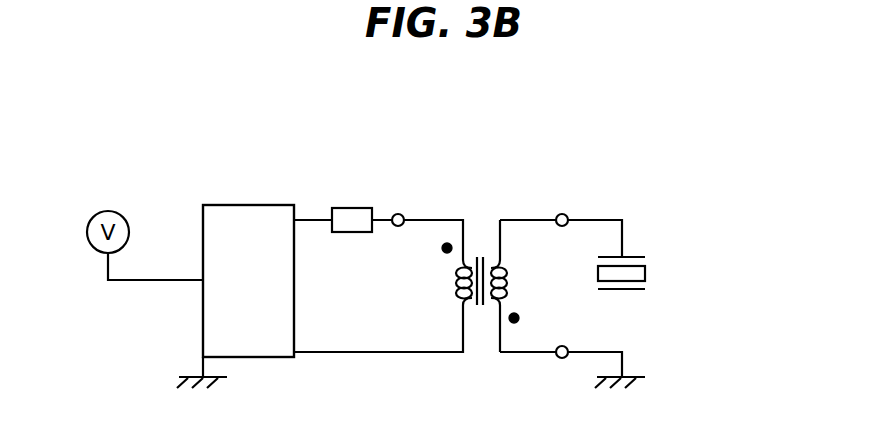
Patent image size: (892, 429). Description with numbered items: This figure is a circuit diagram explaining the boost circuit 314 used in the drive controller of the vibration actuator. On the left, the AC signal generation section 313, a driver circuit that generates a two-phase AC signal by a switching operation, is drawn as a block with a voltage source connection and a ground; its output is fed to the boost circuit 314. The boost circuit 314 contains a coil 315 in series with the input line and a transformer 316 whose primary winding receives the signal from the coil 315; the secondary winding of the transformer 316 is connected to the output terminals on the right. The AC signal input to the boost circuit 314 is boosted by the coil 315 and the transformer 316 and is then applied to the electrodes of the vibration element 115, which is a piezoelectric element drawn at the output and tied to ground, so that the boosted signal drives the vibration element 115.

The AC signal generation section 313 is at (203, 322).
The boost circuit 314 is at (520, 160).
The coil 315 is at (353, 208).
The transformer 316 is at (480, 238).
The vibration element 115 is at (645, 272).